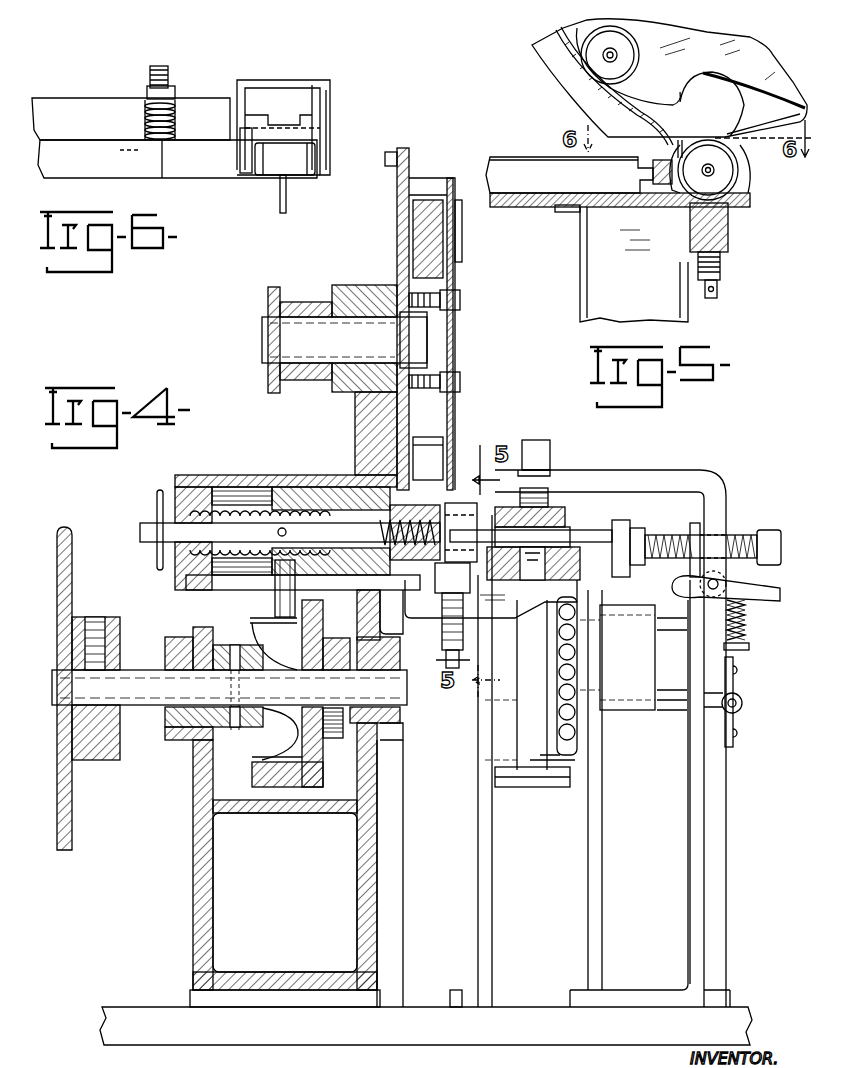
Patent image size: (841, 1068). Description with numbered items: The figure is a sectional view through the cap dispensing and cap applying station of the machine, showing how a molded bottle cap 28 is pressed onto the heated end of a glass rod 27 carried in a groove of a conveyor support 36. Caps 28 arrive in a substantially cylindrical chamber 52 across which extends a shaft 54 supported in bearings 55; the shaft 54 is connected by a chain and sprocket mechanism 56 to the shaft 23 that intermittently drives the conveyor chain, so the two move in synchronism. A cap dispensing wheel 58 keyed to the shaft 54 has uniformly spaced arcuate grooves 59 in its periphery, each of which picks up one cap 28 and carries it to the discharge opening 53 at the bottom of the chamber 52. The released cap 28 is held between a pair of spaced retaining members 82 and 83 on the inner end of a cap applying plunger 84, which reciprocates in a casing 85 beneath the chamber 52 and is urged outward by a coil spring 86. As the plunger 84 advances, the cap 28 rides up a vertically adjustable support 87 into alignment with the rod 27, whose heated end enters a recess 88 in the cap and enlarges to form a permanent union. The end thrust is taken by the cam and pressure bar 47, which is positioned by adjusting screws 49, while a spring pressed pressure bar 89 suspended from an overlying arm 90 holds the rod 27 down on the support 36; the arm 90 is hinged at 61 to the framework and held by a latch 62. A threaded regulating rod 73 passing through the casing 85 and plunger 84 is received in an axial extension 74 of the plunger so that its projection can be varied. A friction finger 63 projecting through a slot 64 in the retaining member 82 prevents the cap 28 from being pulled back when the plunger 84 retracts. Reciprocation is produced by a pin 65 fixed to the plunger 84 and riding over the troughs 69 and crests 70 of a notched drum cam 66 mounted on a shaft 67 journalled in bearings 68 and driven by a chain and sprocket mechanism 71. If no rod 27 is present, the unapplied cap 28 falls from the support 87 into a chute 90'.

In FIG. 4, the shaft 23 is at (590, 660).
In FIG. 6, the glass rod 27 is at (280, 204).
In FIG. 4, the glass rod 27 is at (600, 532).
In FIG. 6, the bottle cap 28 is at (272, 163).
In FIG. 5, the bottle cap 28 is at (740, 170).
In FIG. 4, the support 36 is at (562, 530).
In FIG. 4, the cam and pressure bar 47 is at (632, 530).
In FIG. 4, the adjusting screw 49 is at (742, 530).
In FIG. 4, the chamber 52 is at (430, 180).
In FIG. 5, the discharge opening 53 is at (738, 106).
In FIG. 4, the discharge opening 53 is at (452, 462).
In FIG. 4, the shaft 54 is at (262, 338).
In FIG. 4, the bearing 55 is at (352, 290).
In FIG. 4, the chain and sprocket mechanism 56 is at (276, 290).
In FIG. 5, the cap dispensing wheel 58 is at (742, 45).
In FIG. 4, the cap dispensing wheel 58 is at (420, 206).
In FIG. 5, the arcuate groove 59 is at (706, 96).
In FIG. 4, the arcuate groove 59 is at (432, 452).
In FIG. 4, the hinge 61 is at (745, 700).
In FIG. 4, the latch 62 is at (766, 587).
In FIG. 6, the friction finger 63 is at (72, 138).
In FIG. 5, the friction finger 63 is at (540, 160).
In FIG. 6, the slot 64 is at (248, 126).
In FIG. 5, the slot 64 is at (663, 165).
In FIG. 4, the slot 64 is at (202, 590).
In FIG. 4, the pin 65 is at (277, 602).
In FIG. 4, the notched drum cam 66 is at (306, 796).
In FIG. 4, the shaft 67 is at (152, 692).
In FIG. 4, the bearing 68 is at (418, 724).
In FIG. 4, the trough 69 is at (292, 645).
In FIG. 4, the crest 70 is at (254, 765).
In FIG. 4, the chain and sprocket mechanism 71 is at (72, 585).
In FIG. 4, the threaded regulating rod 73 is at (150, 530).
In FIG. 6, the axial extension 74 is at (330, 97).
In FIG. 6, the retaining member 82 is at (238, 154).
In FIG. 5, the retaining member 82 is at (690, 196).
In FIG. 6, the retaining member 83 is at (328, 150).
In FIG. 5, the retaining member 83 is at (748, 186).
In FIG. 4, the cap applying plunger 84 is at (303, 478).
In FIG. 4, the casing 85 is at (200, 478).
In FIG. 4, the coil spring 86 is at (250, 478).
In FIG. 5, the vertically adjustable support 87 is at (722, 218).
In FIG. 4, the vertically adjustable support 87 is at (444, 588).
In FIG. 5, the recess 88 is at (616, 54).
In FIG. 4, the pressure bar 89 is at (560, 500).
In FIG. 4, the arm 90 is at (610, 721).
In FIG. 5, the chute 90' is at (617, 263).